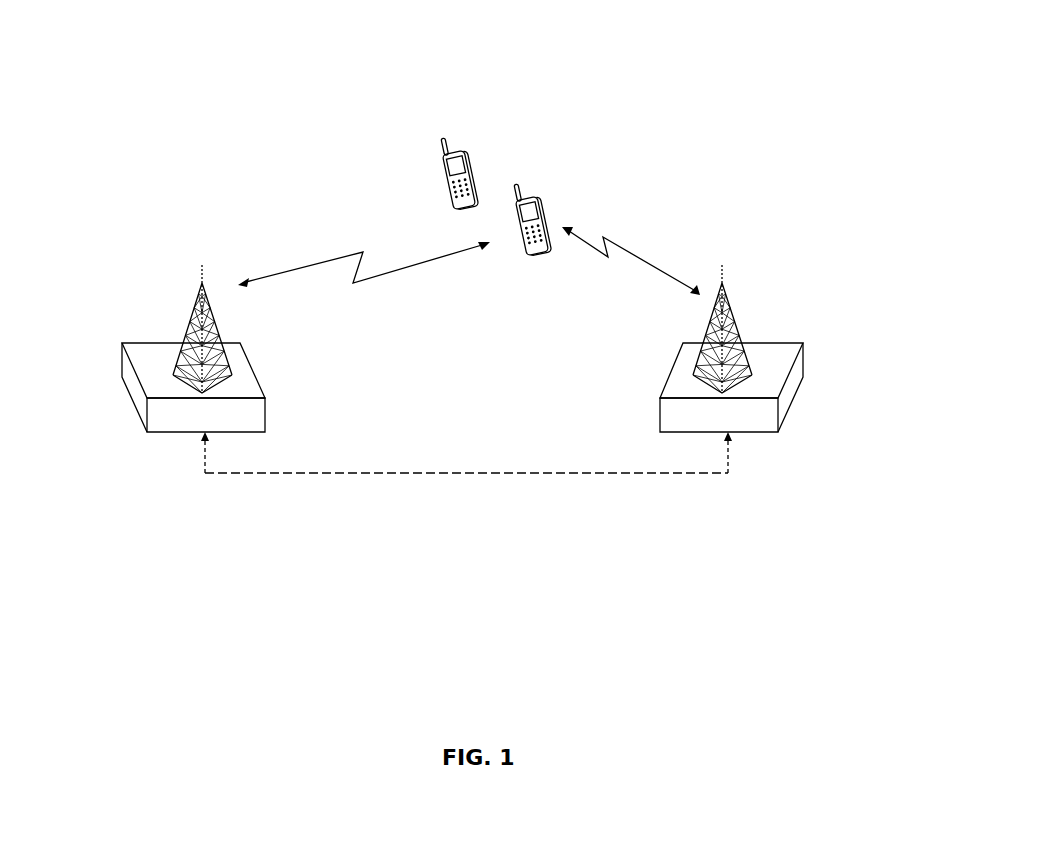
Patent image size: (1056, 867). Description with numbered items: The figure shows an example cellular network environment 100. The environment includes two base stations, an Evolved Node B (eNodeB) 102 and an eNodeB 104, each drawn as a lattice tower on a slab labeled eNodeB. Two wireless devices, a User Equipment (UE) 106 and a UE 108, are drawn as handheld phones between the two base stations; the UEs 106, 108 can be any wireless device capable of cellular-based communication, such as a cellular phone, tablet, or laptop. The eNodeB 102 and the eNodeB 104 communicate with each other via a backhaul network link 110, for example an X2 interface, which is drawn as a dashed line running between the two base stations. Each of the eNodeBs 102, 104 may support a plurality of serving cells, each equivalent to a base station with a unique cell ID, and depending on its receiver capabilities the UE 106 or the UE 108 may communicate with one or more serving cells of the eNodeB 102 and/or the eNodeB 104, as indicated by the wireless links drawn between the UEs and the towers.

The network environment 100 is at (1028, 79).
The Evolved Node B (eNodeB) 102 is at (797, 398).
The eNodeB 104 is at (126, 391).
The User Equipment (UE) 106 is at (532, 257).
The UE 108 is at (443, 175).
The backhaul network link 110 is at (477, 473).